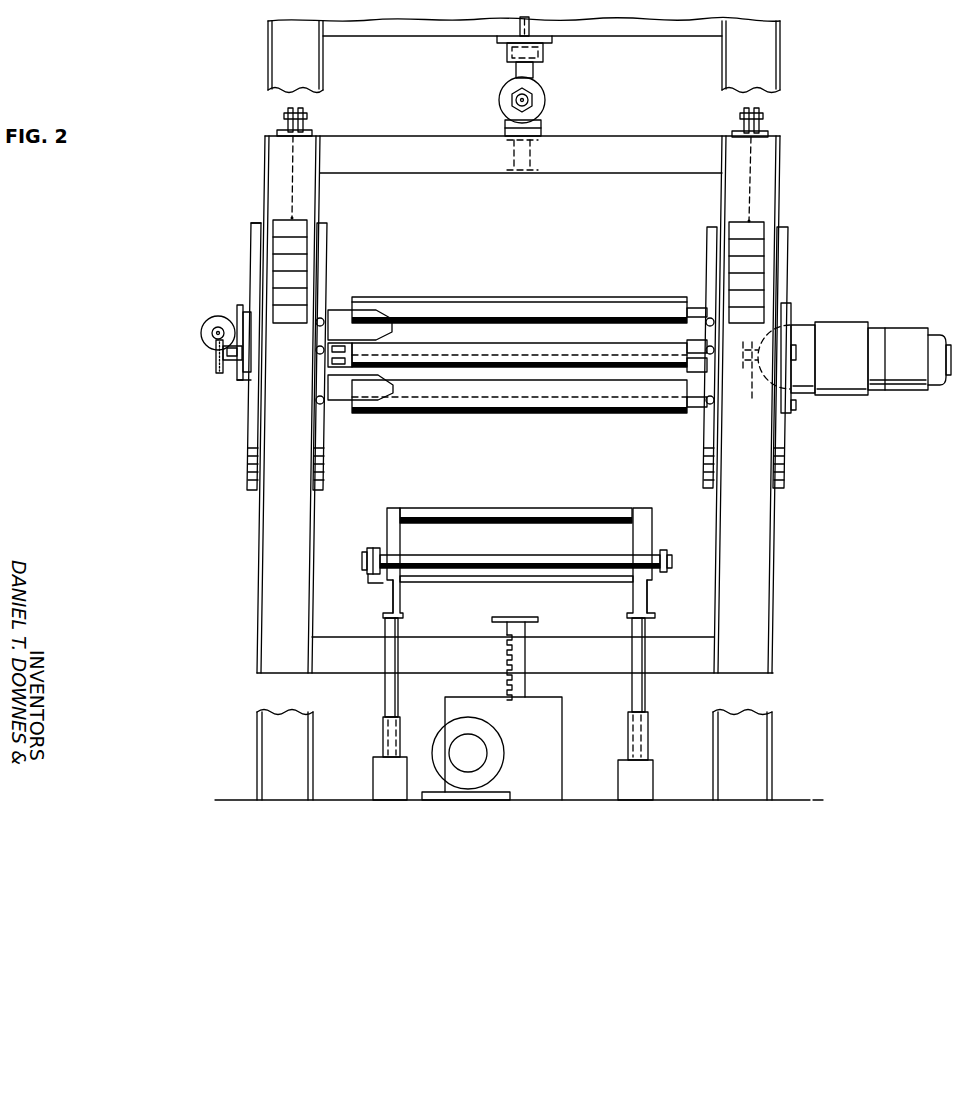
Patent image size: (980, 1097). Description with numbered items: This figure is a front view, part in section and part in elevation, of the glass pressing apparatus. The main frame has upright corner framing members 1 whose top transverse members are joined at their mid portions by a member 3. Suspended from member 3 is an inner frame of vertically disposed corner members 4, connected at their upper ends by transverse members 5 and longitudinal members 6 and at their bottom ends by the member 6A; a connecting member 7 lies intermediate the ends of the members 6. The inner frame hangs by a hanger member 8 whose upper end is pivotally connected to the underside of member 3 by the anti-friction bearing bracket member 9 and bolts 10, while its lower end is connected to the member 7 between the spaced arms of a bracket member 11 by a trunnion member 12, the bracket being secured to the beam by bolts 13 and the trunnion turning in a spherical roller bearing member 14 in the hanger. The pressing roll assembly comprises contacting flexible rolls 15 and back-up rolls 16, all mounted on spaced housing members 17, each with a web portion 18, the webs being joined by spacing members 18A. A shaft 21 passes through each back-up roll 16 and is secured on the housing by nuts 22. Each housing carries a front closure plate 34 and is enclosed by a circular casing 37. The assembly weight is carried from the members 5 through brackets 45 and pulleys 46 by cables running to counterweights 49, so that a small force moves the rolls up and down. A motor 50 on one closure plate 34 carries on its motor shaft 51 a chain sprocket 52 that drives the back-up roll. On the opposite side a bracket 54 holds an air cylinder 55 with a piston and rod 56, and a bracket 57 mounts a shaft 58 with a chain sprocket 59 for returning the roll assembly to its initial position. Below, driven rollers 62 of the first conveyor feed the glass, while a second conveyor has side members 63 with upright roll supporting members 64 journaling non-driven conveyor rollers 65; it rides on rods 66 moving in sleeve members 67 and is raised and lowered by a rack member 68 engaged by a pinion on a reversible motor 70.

The upright corner framing member 1 is at (782, 72).
The member 3 is at (546, 21).
The vertically disposed corner member 4 is at (321, 192).
The member 5 is at (318, 135).
The member 6 is at (522, 154).
The member 6A is at (352, 648).
The connecting member 7 is at (531, 155).
The hanger member 8 is at (533, 70).
The anti-friction bearing bracket member 9 is at (507, 58).
The bolt 10 is at (505, 40).
The bracket member 11 is at (542, 124).
The trunnion member 12 is at (547, 99).
The bolt 13 is at (505, 124).
The spherical roller bearing member 14 is at (500, 99).
The flexible roll 15 is at (467, 372).
The back-up roll 16 is at (395, 299).
The housing member 17 is at (250, 268).
The web portion 18 is at (332, 304).
The spacing member 18A is at (345, 394).
The shaft 21 is at (696, 306).
The nut 22 is at (316, 323).
The front closure plate 34 is at (248, 445).
The circular casing 37 is at (256, 224).
The bracket 45 is at (766, 131).
The pulley 46 is at (290, 108).
The counterweight 49 is at (760, 245).
The motor 50 is at (854, 358).
The motor shaft 51 is at (752, 400).
The chain sprocket 52 is at (748, 372).
The bracket 54 is at (243, 315).
The air cylinder 55 is at (205, 330).
The piston and rod 56 is at (217, 328).
The bracket 57 is at (246, 384).
The shaft 58 is at (230, 368).
The chain sprocket 59 is at (216, 358).
The driven roller 62 is at (571, 558).
The side member 63 is at (392, 598).
The upright roll supporting member 64 is at (387, 527).
The non-driven conveyor roller 65 is at (582, 510).
The rod 66 is at (385, 695).
The sleeve member 67 is at (383, 738).
The rack member 68 is at (525, 655).
The motor 70 is at (492, 748).